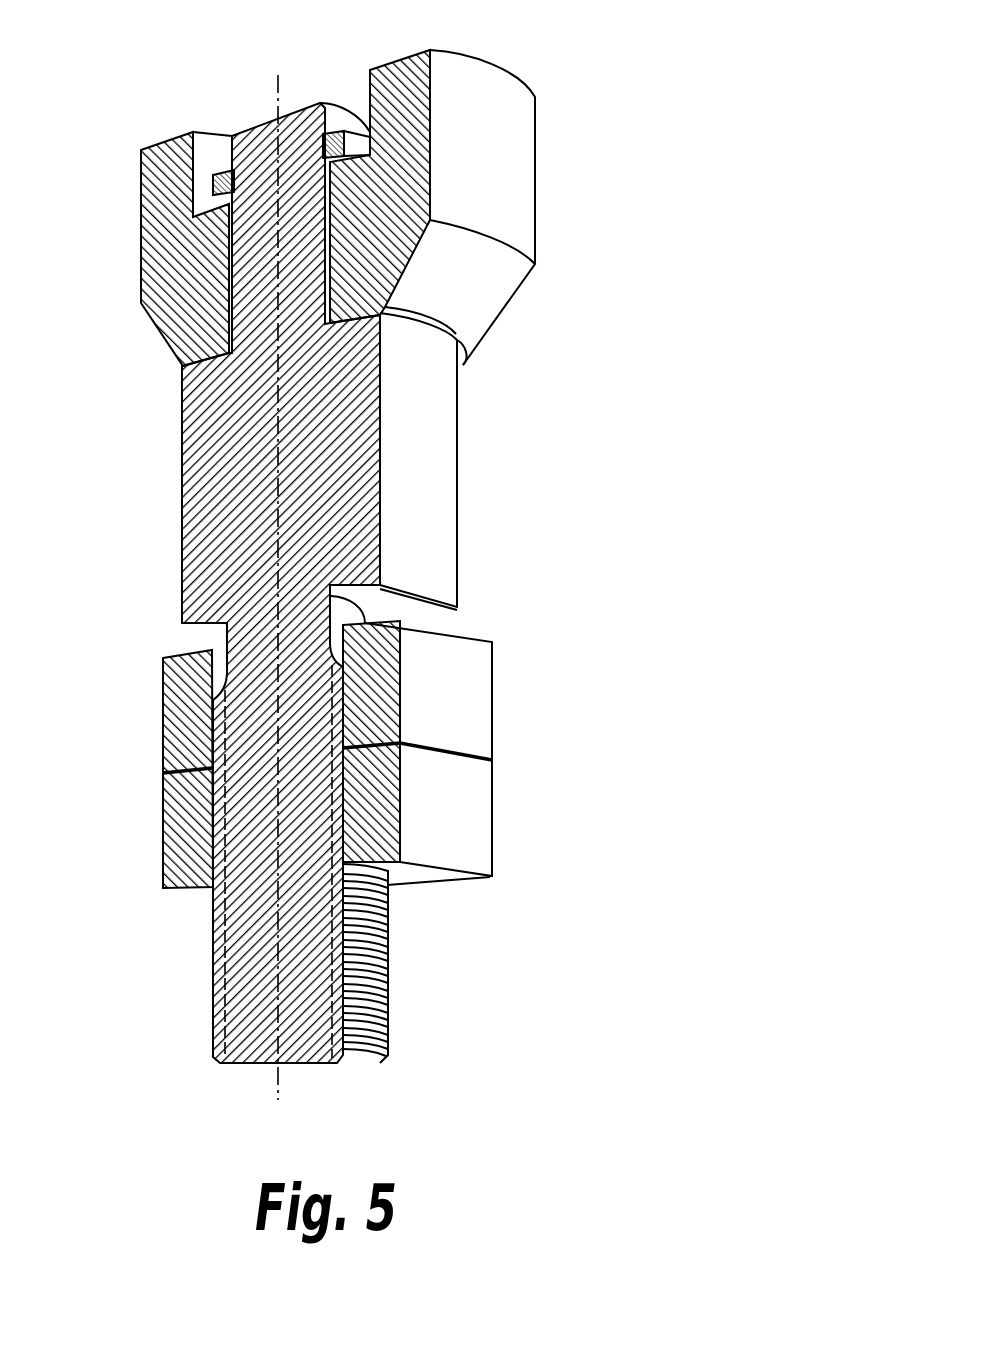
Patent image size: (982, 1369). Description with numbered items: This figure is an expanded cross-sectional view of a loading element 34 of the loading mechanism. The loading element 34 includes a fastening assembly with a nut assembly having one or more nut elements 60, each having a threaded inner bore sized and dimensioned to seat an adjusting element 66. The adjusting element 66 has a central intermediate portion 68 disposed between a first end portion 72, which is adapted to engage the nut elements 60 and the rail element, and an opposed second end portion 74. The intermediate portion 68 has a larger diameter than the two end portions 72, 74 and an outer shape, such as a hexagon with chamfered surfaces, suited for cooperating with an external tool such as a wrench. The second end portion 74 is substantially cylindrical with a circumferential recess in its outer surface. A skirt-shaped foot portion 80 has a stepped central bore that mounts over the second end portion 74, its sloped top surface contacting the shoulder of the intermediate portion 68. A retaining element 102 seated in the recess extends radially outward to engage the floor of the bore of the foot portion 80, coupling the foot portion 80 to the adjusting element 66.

The loading element 34 is at (485, 1023).
The nut elements 60 is at (163, 815).
The adjusting element 66 is at (197, 475).
The intermediate portion 68 is at (455, 485).
The first end portion 72 is at (213, 1007).
The second end portion 74 is at (313, 103).
The foot portion 80 is at (145, 234).
The retaining element 102 is at (218, 173).